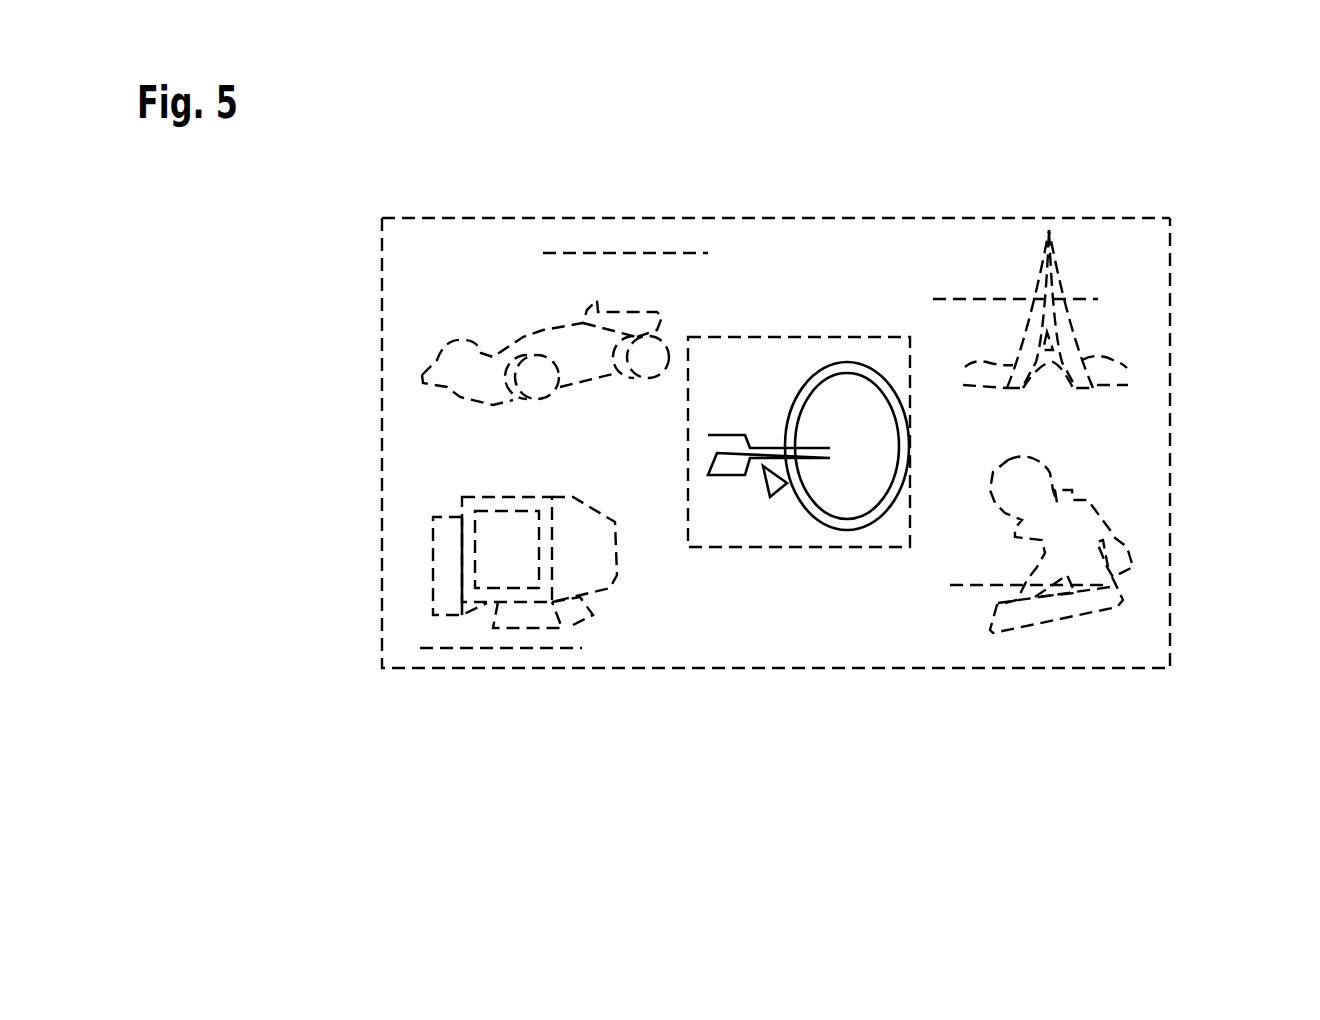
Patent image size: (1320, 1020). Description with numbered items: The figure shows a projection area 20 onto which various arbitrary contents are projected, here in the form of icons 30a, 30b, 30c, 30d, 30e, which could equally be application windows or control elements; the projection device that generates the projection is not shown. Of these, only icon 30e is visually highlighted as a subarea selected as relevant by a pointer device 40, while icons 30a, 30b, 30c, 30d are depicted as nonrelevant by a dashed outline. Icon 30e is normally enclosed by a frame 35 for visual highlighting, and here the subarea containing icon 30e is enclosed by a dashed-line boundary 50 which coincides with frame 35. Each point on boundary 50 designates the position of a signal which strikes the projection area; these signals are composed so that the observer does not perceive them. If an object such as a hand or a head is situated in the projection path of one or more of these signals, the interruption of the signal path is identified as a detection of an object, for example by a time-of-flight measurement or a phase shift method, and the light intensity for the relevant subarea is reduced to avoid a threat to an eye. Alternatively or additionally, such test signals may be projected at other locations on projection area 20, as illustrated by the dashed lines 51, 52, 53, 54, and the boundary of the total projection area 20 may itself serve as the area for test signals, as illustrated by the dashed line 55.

The projection area 20 is at (1087, 218).
The dashed line 55 is at (808, 218).
The dashed line 54 is at (631, 253).
The dashed line 53 is at (985, 299).
The dashed line 51 is at (478, 648).
The dashed line 52 is at (977, 585).
The frame 35 is at (878, 316).
The dashed-line boundary 50 is at (870, 547).
The pointer device 40 is at (767, 497).
The icon 30a is at (556, 627).
The icon 30b is at (1036, 612).
The icon 30c is at (1072, 350).
The icon 30d is at (555, 343).
The icon 30e is at (846, 385).